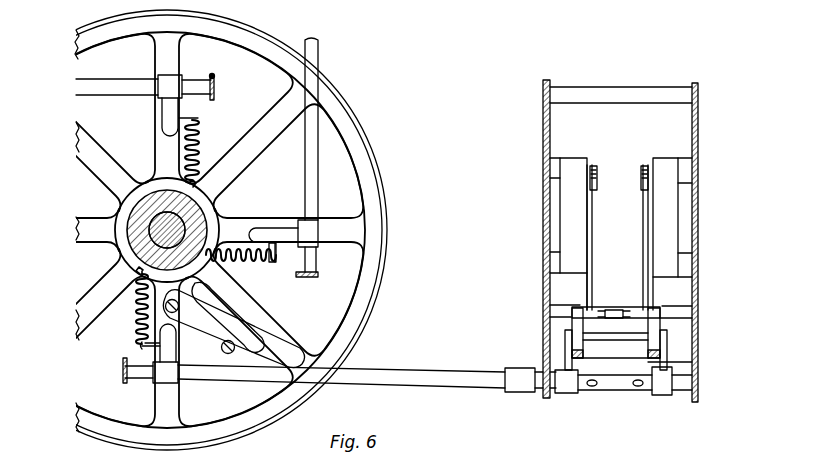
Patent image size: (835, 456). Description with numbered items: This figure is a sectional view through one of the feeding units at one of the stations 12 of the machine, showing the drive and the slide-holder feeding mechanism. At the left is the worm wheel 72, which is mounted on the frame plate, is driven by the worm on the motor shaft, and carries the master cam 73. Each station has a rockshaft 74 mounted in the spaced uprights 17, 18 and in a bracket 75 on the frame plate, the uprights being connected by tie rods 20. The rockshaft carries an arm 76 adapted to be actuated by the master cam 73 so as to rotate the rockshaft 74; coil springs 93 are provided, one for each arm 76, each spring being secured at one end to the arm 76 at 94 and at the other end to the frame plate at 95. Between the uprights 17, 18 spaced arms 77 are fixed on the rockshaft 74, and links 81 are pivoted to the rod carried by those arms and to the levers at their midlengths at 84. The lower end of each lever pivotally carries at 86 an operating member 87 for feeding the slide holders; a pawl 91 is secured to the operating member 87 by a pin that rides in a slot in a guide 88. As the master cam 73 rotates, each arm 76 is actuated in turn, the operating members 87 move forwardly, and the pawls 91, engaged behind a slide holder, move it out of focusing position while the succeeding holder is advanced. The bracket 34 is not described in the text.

The stations 12 is at (617, 234).
The upright 17 is at (697, 110).
The upright 18 is at (544, 148).
The tie rods 20 is at (622, 77).
The bracket 34 is at (276, 259).
The worm wheel 72 is at (354, 306).
The master cam 73 is at (218, 338).
The rockshaft 74 is at (126, 66).
The bracket 75 is at (216, 88).
The arm 76 is at (172, 114).
The spaced arms 77 is at (571, 348).
The links 81 is at (681, 363).
The pivot 84 is at (643, 340).
The pivot 86 is at (627, 284).
The operating member 87 is at (648, 232).
The guides 88 is at (574, 172).
The pawl 91 is at (646, 168).
The coil springs 93 is at (200, 136).
The spring attachment point on arm 94 is at (140, 344).
The spring attachment point on frame plate 95 is at (200, 189).